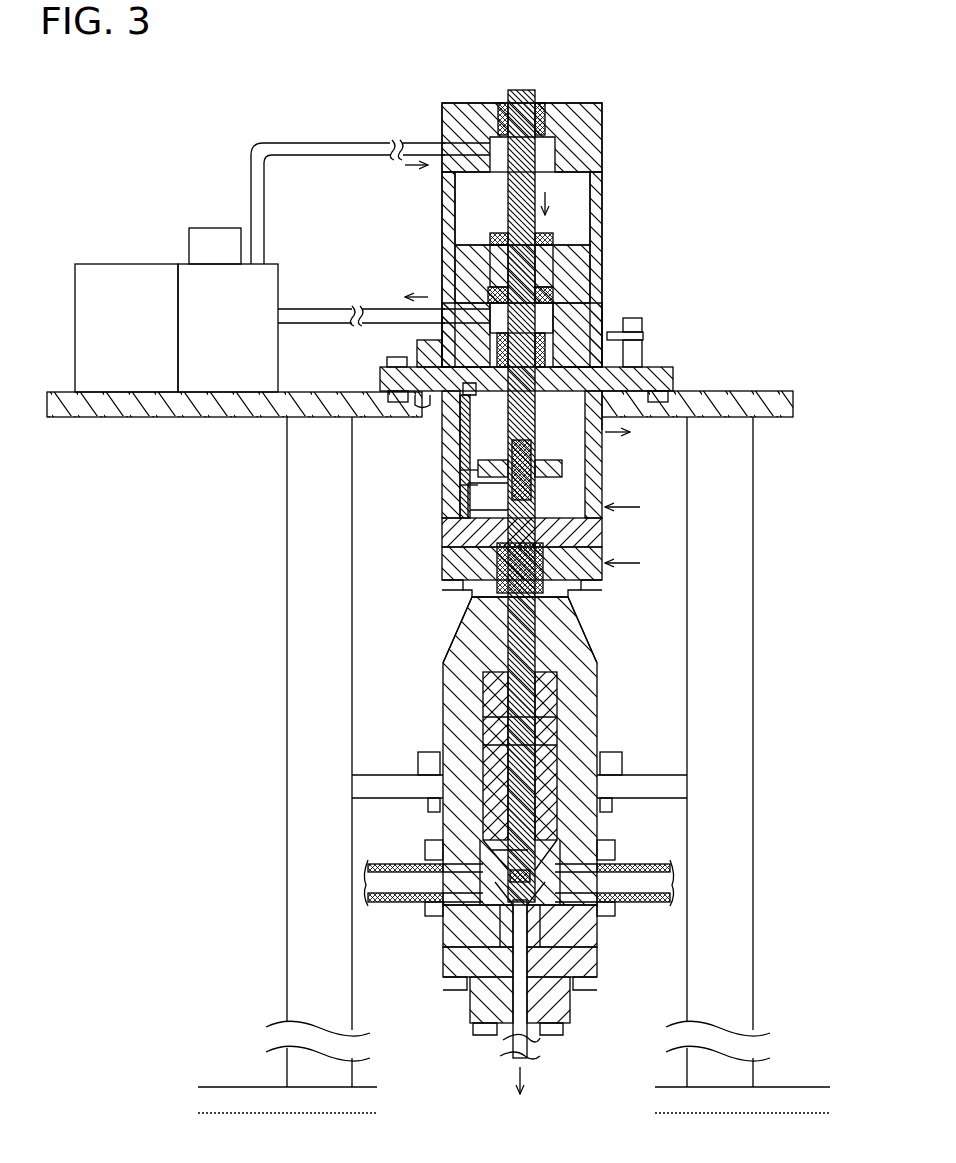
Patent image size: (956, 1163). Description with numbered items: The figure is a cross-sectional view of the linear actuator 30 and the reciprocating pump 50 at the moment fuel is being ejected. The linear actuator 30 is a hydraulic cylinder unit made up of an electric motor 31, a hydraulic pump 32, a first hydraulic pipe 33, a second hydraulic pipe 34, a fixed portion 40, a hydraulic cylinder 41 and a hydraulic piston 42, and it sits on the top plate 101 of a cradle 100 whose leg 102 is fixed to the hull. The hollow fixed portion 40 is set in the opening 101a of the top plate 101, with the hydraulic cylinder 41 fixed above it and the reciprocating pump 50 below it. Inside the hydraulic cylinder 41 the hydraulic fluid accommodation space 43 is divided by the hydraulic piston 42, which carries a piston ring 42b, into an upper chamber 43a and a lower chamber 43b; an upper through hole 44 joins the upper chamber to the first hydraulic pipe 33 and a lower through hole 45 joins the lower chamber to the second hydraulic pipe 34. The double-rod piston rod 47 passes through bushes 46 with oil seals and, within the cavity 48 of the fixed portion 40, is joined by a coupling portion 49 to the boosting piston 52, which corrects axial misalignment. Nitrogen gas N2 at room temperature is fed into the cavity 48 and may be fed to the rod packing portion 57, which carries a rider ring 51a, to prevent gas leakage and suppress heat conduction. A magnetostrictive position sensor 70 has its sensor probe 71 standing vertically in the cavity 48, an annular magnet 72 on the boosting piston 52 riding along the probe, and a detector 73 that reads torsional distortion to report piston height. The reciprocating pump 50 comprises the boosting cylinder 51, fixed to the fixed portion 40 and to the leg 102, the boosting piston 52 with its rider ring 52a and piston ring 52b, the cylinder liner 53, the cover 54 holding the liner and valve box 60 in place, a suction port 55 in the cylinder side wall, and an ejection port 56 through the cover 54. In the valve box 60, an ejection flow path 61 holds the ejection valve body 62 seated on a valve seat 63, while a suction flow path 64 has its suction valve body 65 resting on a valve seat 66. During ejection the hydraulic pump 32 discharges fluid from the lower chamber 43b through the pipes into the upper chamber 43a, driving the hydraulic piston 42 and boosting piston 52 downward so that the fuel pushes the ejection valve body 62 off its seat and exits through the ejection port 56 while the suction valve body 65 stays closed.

The linear actuator 30 is at (680, 137).
The electric motor 31 is at (116, 262).
The hydraulic pump 32 is at (192, 274).
The first hydraulic pipe 33 is at (372, 140).
The second hydraulic pipe 34 is at (352, 308).
The fixed portion 40 is at (445, 528).
The hydraulic cylinder 41 is at (565, 318).
The hydraulic piston 42 is at (452, 250).
The piston ring 42b is at (446, 270).
The hydraulic fluid accommodation space 43 is at (712, 180).
The upper chamber 43a is at (572, 152).
The lower chamber 43b is at (565, 294).
The upper through hole 44 is at (450, 146).
The lower through hole 45 is at (452, 305).
The bush 46 is at (505, 106).
The piston rod 47 is at (560, 104).
The cavity 48 is at (582, 497).
The coupling portion 49 is at (566, 470).
The reciprocating pump 50 is at (606, 638).
The boosting cylinder 51 is at (456, 690).
The rider ring 51a is at (448, 565).
The boosting piston 52 is at (556, 717).
The rider ring 52a is at (500, 717).
The piston ring 52b is at (500, 745).
The cylinder liner 53 is at (560, 745).
The cover 54 is at (574, 986).
The suction port 55 is at (515, 872).
The ejection port 56 is at (542, 1046).
The rod packing portion 57 is at (476, 592).
The valve box 60 is at (525, 890).
The ejection flow path 61 is at (600, 842).
The ejection valve body 62 is at (560, 896).
The valve seat 63 is at (620, 893).
The suction flow path 64 is at (520, 878).
The suction valve body 65 is at (505, 850).
The valve seat 66 is at (515, 860).
The magnetostrictive position sensor 70 is at (232, 423).
The sensor probe 71 is at (470, 470).
The annular magnet 72 is at (470, 483).
The detector 73 is at (412, 398).
The cradle 100 is at (802, 368).
The top plate 101 is at (722, 386).
The opening 101a is at (452, 428).
The leg 102 is at (722, 425).
The nitrogen gas N2 is at (636, 536).